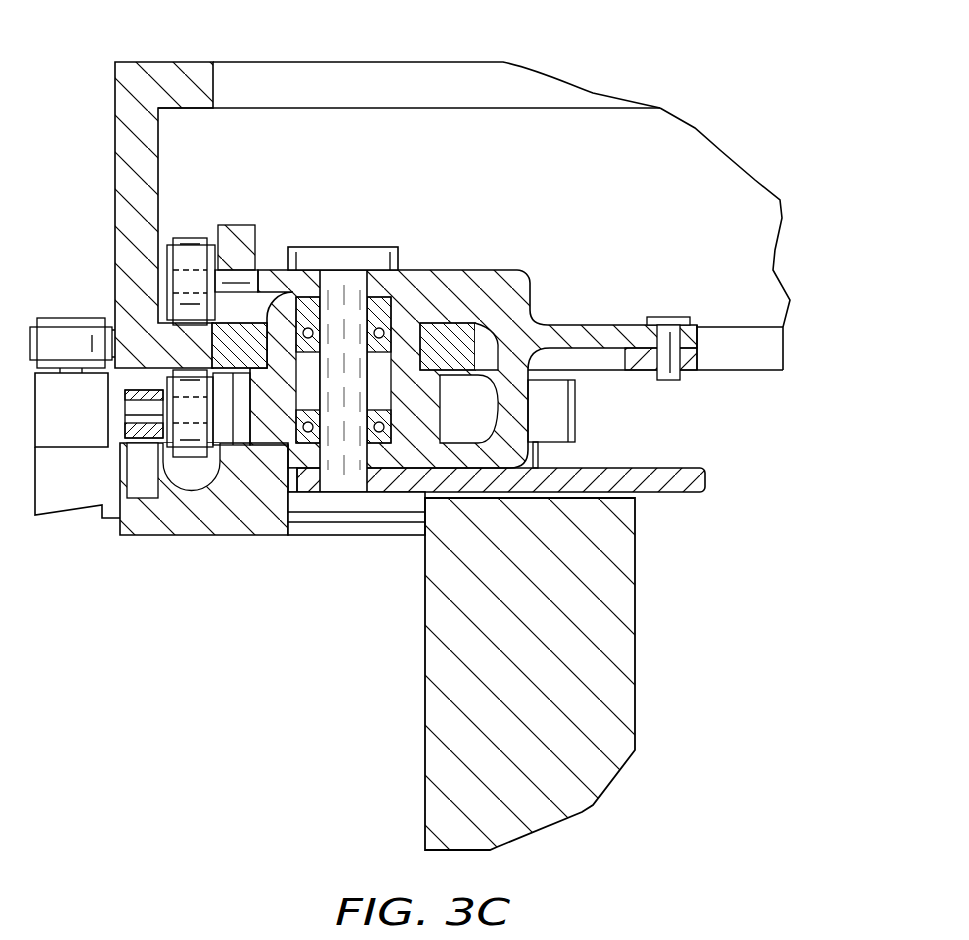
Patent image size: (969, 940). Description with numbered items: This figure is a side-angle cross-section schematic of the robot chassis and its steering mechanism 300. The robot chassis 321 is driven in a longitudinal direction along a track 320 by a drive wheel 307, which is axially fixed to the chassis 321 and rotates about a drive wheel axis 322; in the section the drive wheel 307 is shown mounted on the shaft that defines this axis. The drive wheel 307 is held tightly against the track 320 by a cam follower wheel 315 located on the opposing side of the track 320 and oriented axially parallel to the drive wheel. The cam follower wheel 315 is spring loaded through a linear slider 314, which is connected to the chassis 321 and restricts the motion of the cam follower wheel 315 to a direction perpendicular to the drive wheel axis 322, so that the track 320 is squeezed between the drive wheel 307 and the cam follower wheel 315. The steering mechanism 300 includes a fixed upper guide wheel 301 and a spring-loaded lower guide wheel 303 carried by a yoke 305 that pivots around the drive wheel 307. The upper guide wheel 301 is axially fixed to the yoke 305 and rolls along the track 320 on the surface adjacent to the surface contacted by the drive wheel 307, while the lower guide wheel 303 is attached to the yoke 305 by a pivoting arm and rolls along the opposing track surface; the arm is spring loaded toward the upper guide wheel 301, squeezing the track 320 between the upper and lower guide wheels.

The steering mechanism 300 is at (610, 58).
The upper guide wheel 301 is at (190, 238).
The lower guide wheel 303 is at (192, 457).
The yoke 305 is at (575, 325).
The drive wheel 307 is at (483, 300).
The linear slider 314 is at (65, 503).
The cam follower wheel 315 is at (72, 318).
The track 320 is at (175, 68).
The robot chassis 321 is at (705, 486).
The drive wheel axis 322 is at (345, 254).